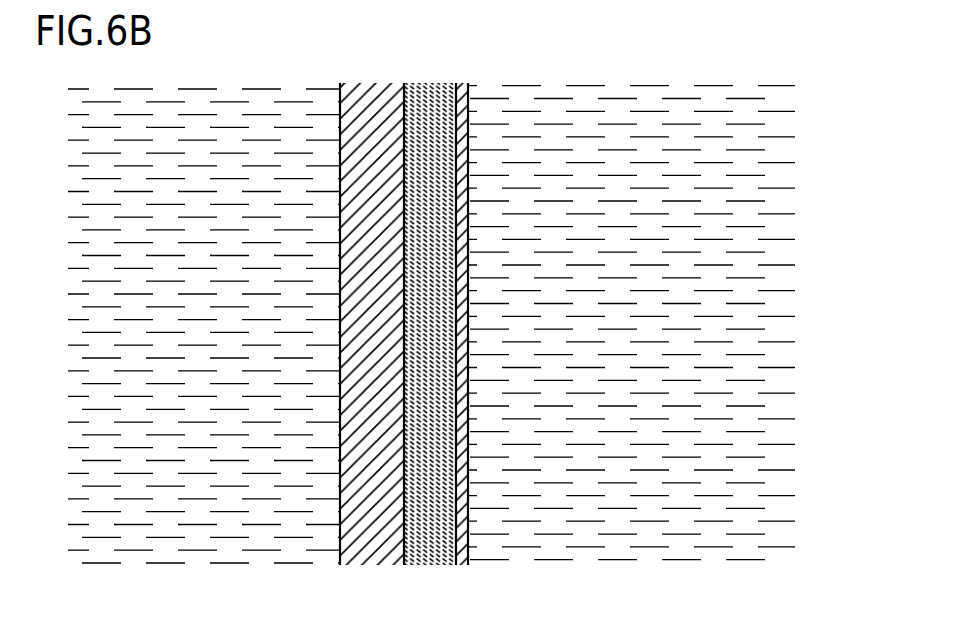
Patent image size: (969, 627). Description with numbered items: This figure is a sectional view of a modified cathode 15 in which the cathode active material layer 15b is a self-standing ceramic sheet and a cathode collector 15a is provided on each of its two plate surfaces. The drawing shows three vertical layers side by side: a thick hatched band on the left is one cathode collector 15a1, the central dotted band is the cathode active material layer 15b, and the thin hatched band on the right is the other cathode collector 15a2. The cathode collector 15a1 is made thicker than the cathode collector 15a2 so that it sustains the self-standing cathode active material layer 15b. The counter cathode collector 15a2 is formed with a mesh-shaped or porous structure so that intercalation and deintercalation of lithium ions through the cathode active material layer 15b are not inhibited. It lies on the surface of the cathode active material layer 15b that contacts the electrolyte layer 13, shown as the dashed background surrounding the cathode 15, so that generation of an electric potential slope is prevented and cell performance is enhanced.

The electrolyte layer 13 is at (622, 92).
The cathode 15 is at (434, 324).
The cathode collector 15a is at (434, 351).
The cathode collector 15a1 is at (377, 564).
The counter cathode collector 15a2 is at (523, 597).
The cathode active material layer 15b is at (428, 565).